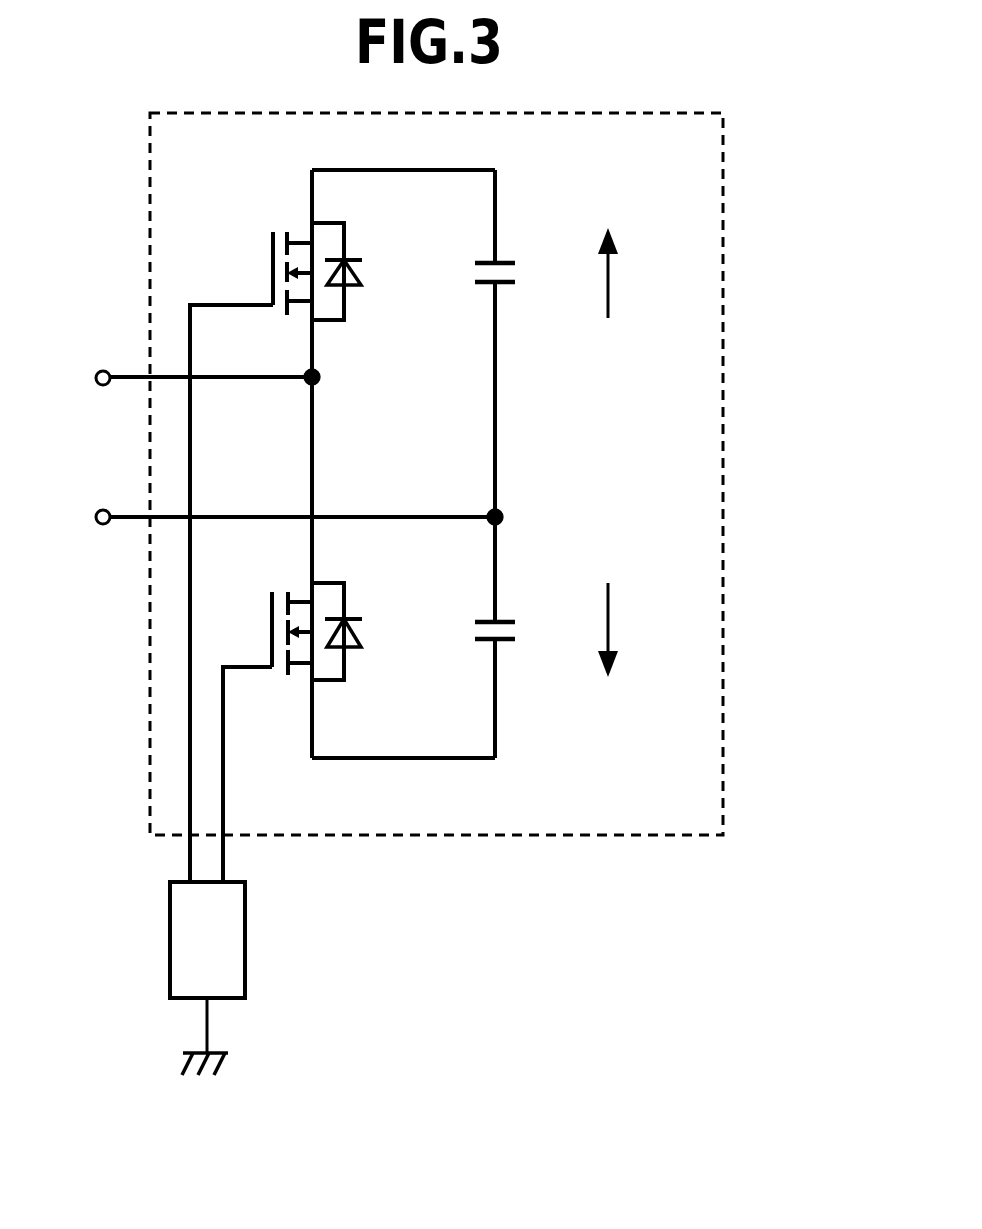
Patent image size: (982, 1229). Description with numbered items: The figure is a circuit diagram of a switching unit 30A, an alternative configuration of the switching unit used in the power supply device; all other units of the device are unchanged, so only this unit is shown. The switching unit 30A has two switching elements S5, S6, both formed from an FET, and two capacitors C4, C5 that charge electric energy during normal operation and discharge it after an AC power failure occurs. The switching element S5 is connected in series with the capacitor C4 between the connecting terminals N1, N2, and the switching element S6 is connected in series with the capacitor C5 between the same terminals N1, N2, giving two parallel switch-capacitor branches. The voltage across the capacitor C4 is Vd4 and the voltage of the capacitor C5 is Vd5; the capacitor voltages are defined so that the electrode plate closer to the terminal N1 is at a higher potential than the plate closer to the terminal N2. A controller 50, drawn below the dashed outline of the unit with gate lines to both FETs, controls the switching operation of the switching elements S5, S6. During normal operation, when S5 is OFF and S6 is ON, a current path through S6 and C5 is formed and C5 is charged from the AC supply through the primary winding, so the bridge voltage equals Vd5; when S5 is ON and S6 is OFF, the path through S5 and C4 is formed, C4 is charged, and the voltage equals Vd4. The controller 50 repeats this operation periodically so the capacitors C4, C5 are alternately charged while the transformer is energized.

The switching unit 30A is at (723, 176).
The connecting terminal N1 is at (97, 372).
The connecting terminal N2 is at (97, 511).
The switching element S5 is at (303, 552).
The switching element S6 is at (320, 732).
The capacitor C4 is at (526, 275).
The capacitor C5 is at (525, 632).
The voltage across capacitor C4 Vd4 is at (643, 273).
The voltage of capacitor C5 Vd5 is at (644, 630).
The controller 50 is at (245, 910).